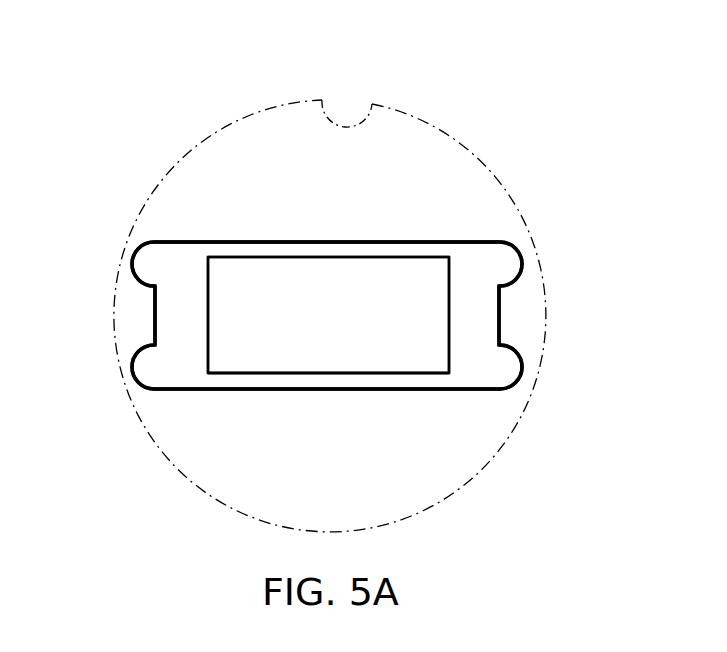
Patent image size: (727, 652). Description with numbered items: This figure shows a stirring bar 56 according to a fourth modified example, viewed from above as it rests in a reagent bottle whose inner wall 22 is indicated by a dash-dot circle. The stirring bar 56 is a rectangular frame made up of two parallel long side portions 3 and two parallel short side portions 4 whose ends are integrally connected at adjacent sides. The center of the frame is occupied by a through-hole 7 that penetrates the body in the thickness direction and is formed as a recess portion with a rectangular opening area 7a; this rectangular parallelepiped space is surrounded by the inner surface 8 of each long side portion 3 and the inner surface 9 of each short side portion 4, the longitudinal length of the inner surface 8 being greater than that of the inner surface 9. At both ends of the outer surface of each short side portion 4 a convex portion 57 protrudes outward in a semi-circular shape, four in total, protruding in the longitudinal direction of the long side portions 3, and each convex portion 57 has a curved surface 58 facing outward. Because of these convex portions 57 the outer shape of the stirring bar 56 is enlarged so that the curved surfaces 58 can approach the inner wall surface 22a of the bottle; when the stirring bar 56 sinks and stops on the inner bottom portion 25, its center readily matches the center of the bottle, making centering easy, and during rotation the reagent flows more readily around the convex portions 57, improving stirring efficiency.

The long side portion 3 is at (288, 246).
The short side portion 4 is at (193, 267).
The through-hole 7 is at (352, 348).
The opening area 7a is at (413, 345).
The inner surface of the long side portion 8 is at (327, 257).
The inner surface of the short side portion 9 is at (210, 325).
The inner wall 22 is at (478, 153).
The inner wall surface 22a is at (323, 94).
The inner bottom portion 25 is at (275, 157).
The stirring bar 56 is at (375, 210).
The convex portion 57 is at (162, 257).
The curved surface 58 is at (132, 264).